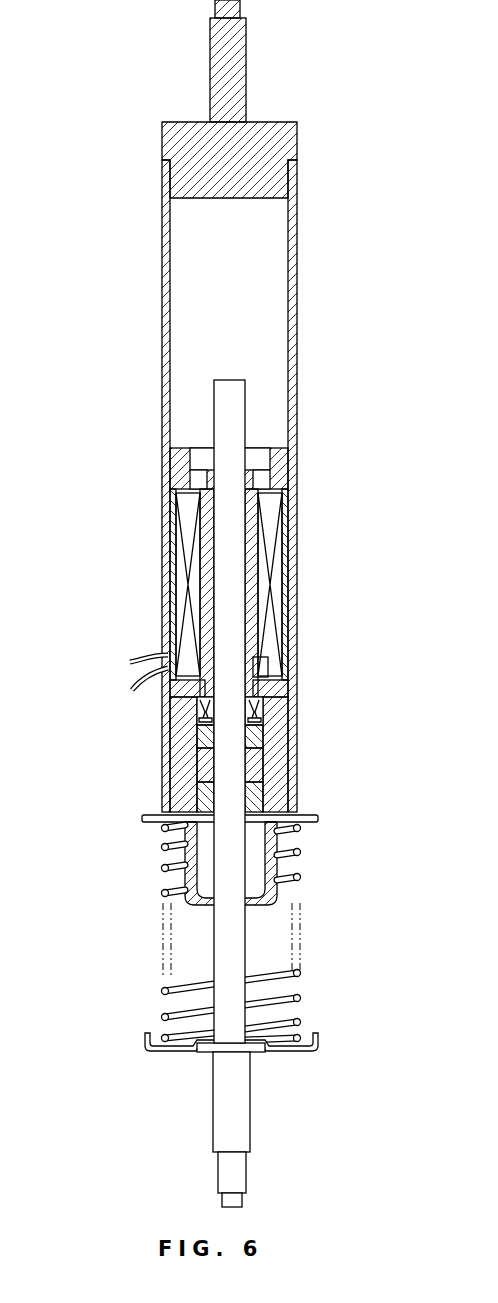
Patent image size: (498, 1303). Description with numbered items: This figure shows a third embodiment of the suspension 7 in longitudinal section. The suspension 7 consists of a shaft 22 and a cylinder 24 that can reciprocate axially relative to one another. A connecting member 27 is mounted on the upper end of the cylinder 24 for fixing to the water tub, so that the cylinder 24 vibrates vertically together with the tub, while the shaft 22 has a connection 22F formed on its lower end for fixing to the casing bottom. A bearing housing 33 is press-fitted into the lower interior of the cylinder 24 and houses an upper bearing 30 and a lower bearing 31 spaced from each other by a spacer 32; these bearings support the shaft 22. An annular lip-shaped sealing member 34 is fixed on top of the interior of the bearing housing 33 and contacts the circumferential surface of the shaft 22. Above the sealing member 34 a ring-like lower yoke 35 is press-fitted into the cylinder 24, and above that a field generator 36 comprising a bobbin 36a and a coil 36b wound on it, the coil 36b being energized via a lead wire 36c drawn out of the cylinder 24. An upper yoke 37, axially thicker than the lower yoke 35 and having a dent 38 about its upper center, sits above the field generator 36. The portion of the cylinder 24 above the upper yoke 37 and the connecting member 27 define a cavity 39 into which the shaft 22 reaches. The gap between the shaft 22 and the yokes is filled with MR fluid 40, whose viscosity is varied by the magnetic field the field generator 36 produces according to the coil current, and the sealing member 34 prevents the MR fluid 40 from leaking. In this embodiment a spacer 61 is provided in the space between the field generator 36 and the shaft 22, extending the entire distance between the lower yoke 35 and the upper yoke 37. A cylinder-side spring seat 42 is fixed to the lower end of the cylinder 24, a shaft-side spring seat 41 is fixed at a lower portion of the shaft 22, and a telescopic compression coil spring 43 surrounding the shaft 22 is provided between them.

The suspension 7 is at (118, 165).
The connecting member 27 is at (210, 70).
The cylinder 24 is at (162, 317).
The cavity 39 is at (262, 277).
The dent 38 is at (257, 448).
The upper yoke 37 is at (282, 462).
The MR fluid 40 is at (262, 480).
The spacer 61 is at (250, 563).
The field generator 36 is at (205, 593).
The bobbin 36a is at (170, 585).
The coil 36b is at (177, 603).
The lead wire 36c is at (130, 665).
The lower yoke 35 is at (278, 684).
The sealing member 34 is at (278, 707).
The bearing housing 33 is at (280, 757).
The bearing 30 is at (197, 735).
The spacer 32 is at (203, 766).
The bearing 31 is at (203, 792).
The cylinder-side spring seat 42 is at (143, 820).
The coil spring 43 is at (163, 895).
The shaft 22 is at (213, 950).
The shaft-side spring seat 41 is at (152, 1048).
The connection 22F is at (218, 1178).